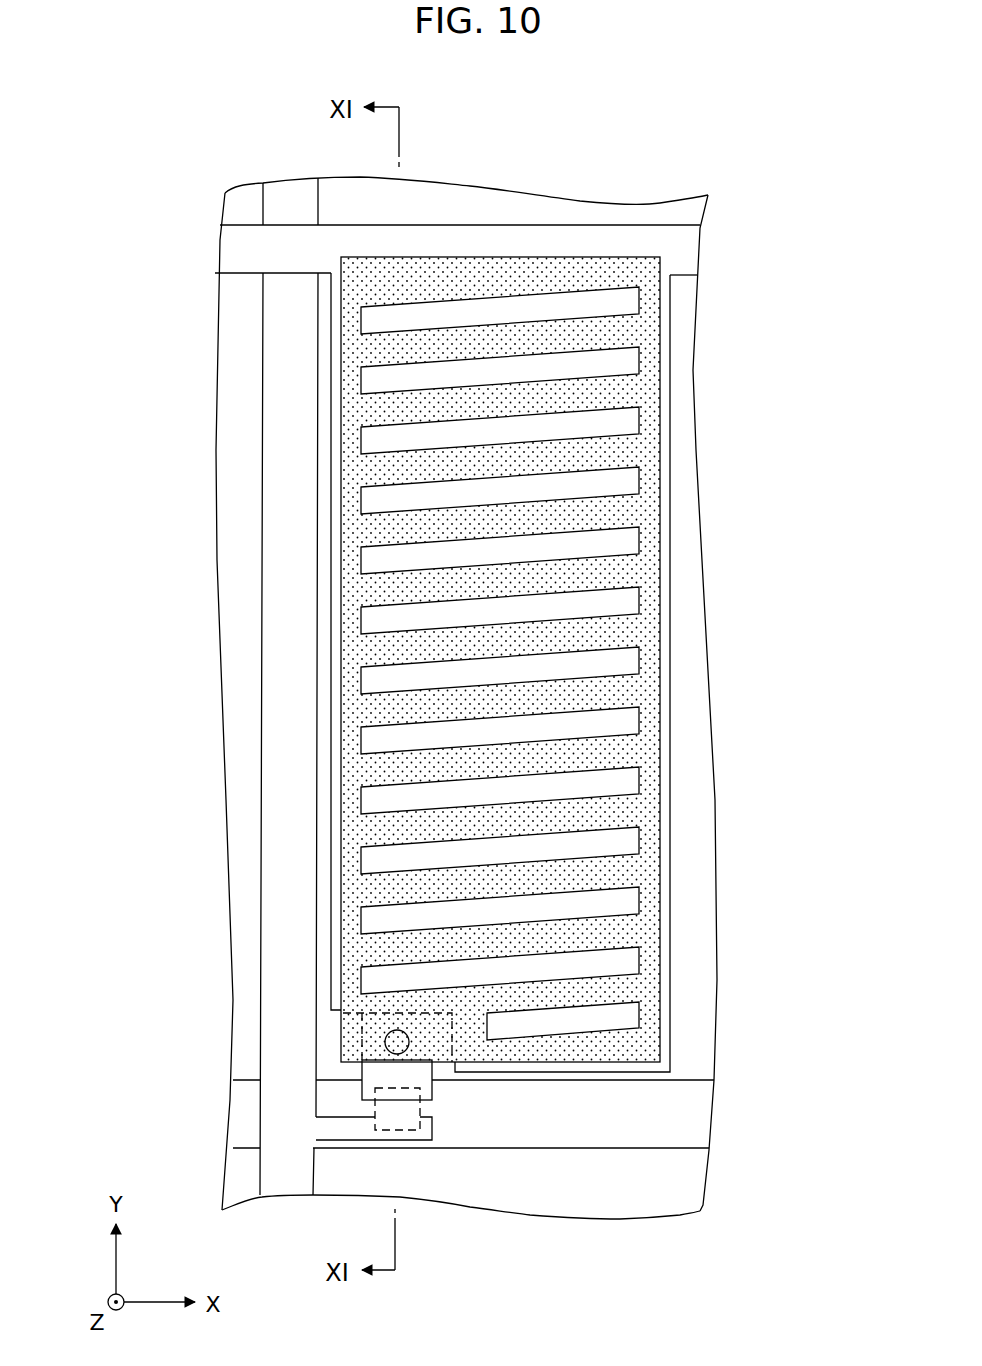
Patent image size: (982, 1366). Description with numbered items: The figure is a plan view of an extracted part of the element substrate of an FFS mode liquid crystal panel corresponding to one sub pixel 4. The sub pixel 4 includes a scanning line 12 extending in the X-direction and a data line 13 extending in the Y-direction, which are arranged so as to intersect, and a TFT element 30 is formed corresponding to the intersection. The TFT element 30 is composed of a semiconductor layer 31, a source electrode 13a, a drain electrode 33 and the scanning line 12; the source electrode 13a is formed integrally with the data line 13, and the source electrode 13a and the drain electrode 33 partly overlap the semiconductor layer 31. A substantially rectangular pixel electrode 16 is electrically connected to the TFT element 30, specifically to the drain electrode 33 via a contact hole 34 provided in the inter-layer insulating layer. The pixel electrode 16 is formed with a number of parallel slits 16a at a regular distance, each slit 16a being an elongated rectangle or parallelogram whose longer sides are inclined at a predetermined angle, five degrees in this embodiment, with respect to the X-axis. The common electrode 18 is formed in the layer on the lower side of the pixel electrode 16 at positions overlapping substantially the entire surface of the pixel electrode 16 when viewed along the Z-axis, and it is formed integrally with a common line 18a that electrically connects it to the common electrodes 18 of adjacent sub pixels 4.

The sub pixel 4 is at (632, 142).
The scanning line 12 is at (700, 1115).
The data line 13 is at (283, 842).
The source electrode 13a is at (432, 1128).
The pixel electrode 16 is at (647, 447).
The slit 16a is at (607, 550).
The common electrode 18 is at (665, 747).
The common line 18a is at (687, 253).
The TFT element 30 is at (387, 1160).
The semiconductor layer 31 is at (410, 1111).
The drain electrode 33 is at (372, 1072).
The contact hole 34 is at (388, 1040).